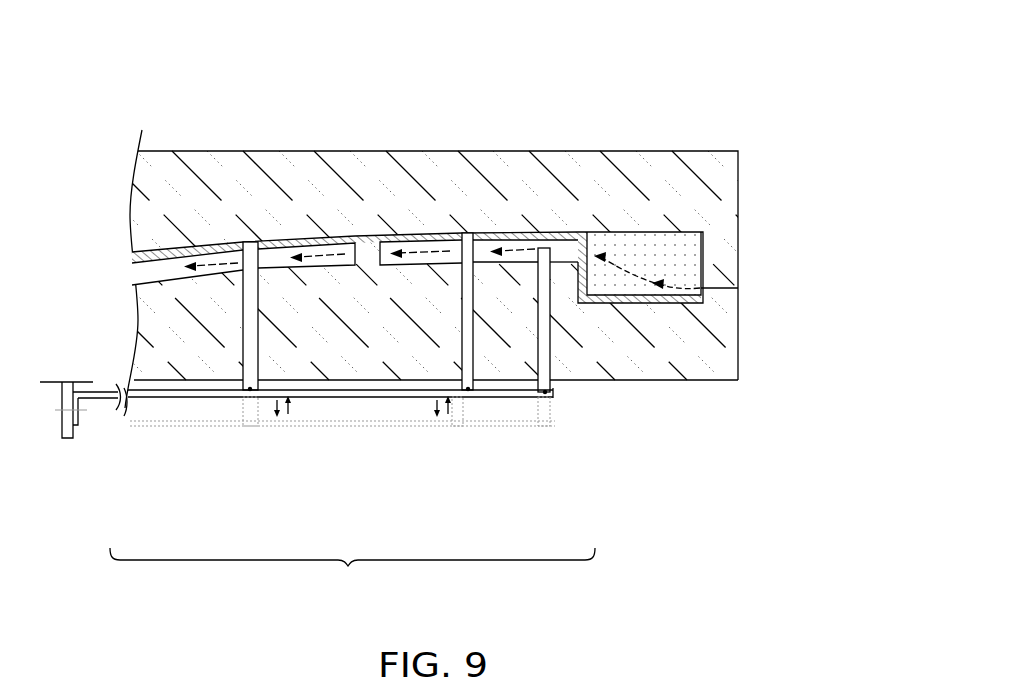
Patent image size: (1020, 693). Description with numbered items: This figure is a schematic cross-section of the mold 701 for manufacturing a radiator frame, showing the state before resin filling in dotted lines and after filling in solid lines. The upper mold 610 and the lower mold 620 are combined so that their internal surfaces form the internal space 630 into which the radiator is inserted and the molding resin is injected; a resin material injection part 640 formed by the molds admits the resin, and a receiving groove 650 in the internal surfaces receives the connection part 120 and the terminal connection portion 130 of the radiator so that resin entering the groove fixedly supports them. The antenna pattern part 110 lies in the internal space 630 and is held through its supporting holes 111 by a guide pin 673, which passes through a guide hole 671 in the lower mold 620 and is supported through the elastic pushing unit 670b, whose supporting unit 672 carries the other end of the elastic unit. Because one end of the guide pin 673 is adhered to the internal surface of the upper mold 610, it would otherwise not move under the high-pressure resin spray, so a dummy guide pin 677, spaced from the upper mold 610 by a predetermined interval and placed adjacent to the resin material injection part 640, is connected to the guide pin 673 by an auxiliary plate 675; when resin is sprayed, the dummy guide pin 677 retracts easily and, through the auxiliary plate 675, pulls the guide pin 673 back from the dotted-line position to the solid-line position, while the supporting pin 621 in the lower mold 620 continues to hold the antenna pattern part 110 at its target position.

The mold for manufacturing the radiator frame 701 is at (688, 54).
The upper mold 610 is at (530, 167).
The lower mold 620 is at (733, 342).
The internal space 630 is at (230, 258).
The supporting pin 621 is at (378, 242).
The resin material injection part 640 is at (738, 288).
The receiving groove 650 is at (593, 290).
The antenna pattern part 110 is at (318, 233).
The supporting hole 111 is at (247, 242).
The connection part 120 is at (560, 266).
The terminal connection portion 130 is at (682, 380).
The elastic pushing unit 670b is at (352, 575).
The guide hole 671 is at (352, 397).
The supporting unit 672 is at (67, 428).
The guide pin 673 is at (286, 400).
The auxiliary plate 675 is at (182, 397).
The dummy guide pin 677 is at (538, 325).